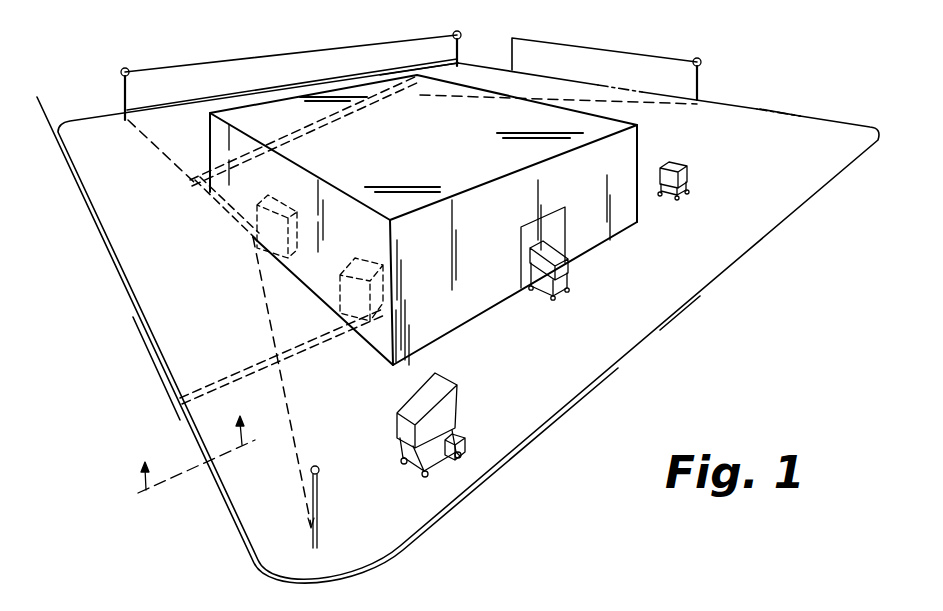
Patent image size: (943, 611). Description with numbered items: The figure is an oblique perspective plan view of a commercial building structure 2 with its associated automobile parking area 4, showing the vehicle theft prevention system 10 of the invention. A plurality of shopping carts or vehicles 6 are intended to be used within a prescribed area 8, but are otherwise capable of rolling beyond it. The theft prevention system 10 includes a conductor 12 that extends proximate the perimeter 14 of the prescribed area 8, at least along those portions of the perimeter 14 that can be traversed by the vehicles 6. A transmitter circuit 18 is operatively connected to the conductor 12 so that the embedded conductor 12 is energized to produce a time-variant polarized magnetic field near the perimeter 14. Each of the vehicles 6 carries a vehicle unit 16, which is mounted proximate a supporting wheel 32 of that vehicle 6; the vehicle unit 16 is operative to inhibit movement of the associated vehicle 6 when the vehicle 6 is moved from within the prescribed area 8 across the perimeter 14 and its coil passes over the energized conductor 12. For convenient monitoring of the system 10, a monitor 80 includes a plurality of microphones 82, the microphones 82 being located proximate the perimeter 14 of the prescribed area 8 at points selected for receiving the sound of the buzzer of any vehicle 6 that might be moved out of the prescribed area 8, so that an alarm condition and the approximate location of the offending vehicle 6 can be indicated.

The commercial building structure 2 is at (473, 288).
The automobile parking area 4 is at (88, 104).
The shopping carts or vehicles 6 is at (683, 165).
The prescribed area 8 is at (180, 229).
The theft prevention system 10 is at (467, 523).
The conductor 12 is at (262, 360).
The perimeter 14 is at (228, 92).
The vehicle unit 16 is at (449, 447).
The transmitter circuit 18 is at (363, 243).
The supporting wheel 32 is at (458, 451).
The monitor 80 is at (303, 180).
The microphones 82 is at (125, 67).